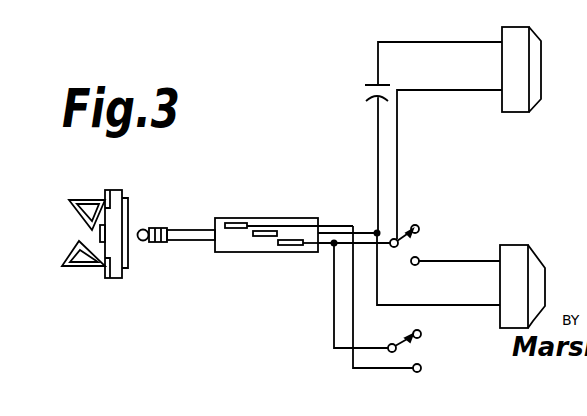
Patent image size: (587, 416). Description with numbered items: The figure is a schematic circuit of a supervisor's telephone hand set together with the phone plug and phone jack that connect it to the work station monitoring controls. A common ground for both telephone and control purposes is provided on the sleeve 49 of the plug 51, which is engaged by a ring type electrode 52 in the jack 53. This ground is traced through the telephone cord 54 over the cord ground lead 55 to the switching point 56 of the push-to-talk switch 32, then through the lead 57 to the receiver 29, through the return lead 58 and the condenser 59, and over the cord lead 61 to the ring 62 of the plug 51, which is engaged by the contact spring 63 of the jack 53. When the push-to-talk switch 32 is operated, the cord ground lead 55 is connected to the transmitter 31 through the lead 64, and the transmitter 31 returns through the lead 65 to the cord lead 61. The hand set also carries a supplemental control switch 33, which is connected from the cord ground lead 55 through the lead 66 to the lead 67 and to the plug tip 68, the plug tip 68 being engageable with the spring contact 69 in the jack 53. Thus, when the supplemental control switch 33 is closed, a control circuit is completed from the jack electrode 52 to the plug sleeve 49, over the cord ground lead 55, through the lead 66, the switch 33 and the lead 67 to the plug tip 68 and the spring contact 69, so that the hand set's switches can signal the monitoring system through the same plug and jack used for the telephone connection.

The receiver 29 is at (542, 76).
The transmitter 31 is at (519, 249).
The push-to-talk switch 32 is at (418, 233).
The supplemental control switch 33 is at (391, 345).
The sleeve 49 is at (185, 230).
The plug 51 is at (255, 218).
The ring type electrode 52 is at (100, 236).
The jack 53 is at (117, 268).
The telephone cord 54 is at (335, 224).
The cord ground lead 55 is at (333, 246).
The switching point 56 is at (396, 239).
The lead 57 is at (453, 89).
The return lead 58 is at (377, 53).
The condenser 59 is at (365, 93).
The cord lead 61 is at (365, 232).
The ring 62 is at (151, 228).
The contact spring 63 is at (71, 205).
The lead 64 is at (466, 260).
The lead 65 is at (471, 304).
The lead 66 is at (333, 334).
The lead 67 is at (356, 368).
The plug tip 68 is at (142, 240).
The spring contact 69 is at (62, 261).